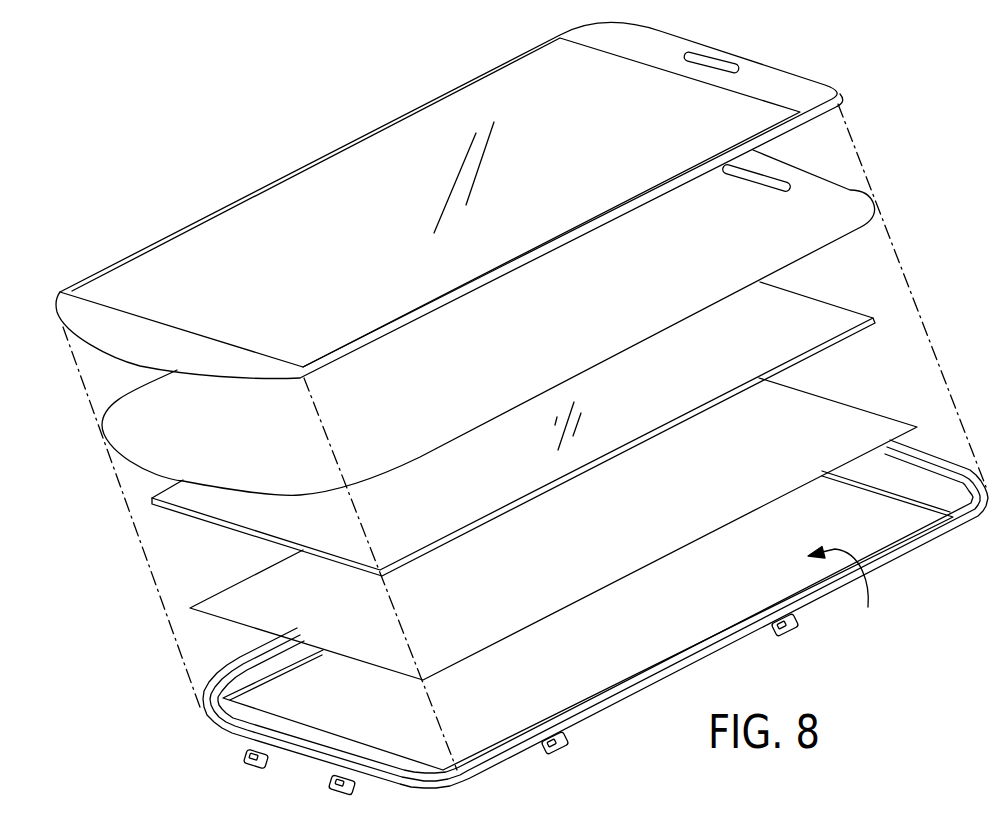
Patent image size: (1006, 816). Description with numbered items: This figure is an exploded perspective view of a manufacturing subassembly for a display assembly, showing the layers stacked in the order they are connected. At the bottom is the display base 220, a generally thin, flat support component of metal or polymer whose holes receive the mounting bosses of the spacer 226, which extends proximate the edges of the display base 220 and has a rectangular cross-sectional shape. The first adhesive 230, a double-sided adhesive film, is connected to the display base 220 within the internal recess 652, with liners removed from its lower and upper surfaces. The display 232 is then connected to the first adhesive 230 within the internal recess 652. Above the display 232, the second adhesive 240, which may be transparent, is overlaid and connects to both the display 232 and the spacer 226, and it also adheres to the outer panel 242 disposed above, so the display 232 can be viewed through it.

The outer panel 242 is at (245, 195).
The second adhesive 240 is at (856, 231).
The display 232 is at (197, 520).
The first adhesive 230 is at (872, 412).
The display base 220 is at (650, 647).
The spacer 226 is at (527, 732).
The internal recess 652 is at (850, 594).